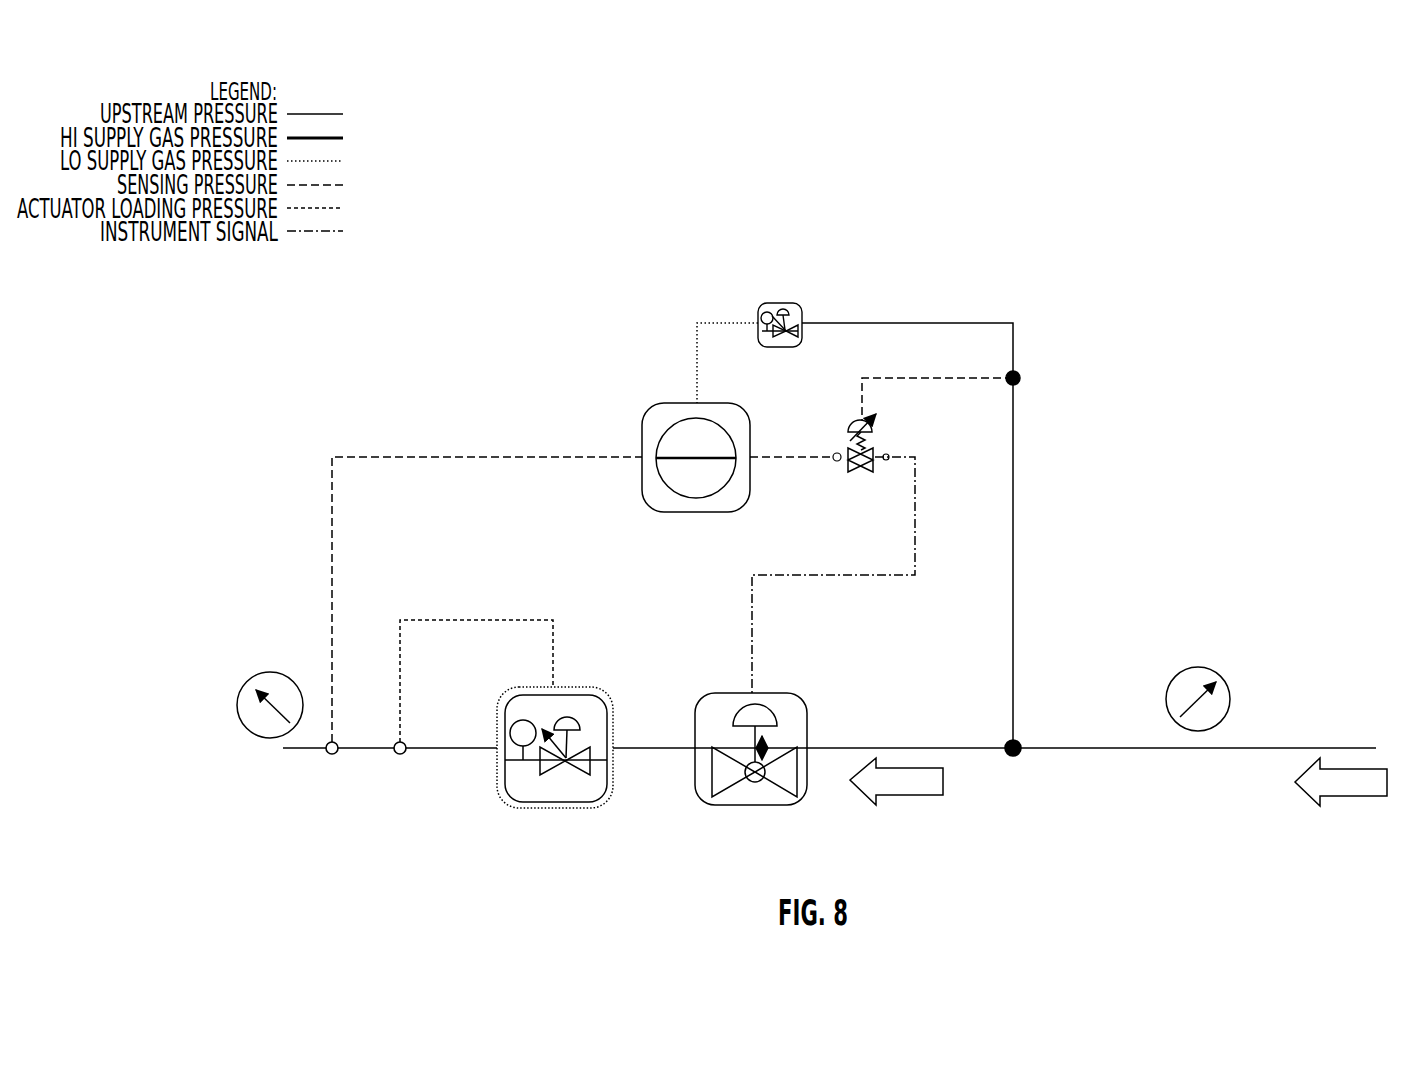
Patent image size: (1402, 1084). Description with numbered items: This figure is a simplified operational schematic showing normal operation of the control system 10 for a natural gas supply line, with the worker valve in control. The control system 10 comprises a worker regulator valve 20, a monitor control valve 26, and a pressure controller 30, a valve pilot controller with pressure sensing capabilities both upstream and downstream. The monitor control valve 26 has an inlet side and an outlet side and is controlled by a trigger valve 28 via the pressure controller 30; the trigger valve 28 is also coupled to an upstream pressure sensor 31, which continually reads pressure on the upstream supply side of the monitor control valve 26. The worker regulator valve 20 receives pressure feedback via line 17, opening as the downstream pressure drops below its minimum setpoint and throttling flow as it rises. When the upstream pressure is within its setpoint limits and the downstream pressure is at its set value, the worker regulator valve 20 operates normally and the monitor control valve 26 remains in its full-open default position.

The control system 10 is at (388, 398).
The line 17 is at (442, 615).
The worker regulator valve 20 is at (604, 701).
The monitor control valve 26 is at (800, 713).
The trigger valve 28 is at (849, 472).
The pressure controller 30 is at (642, 425).
The upstream pressure sensor 31 is at (805, 317).